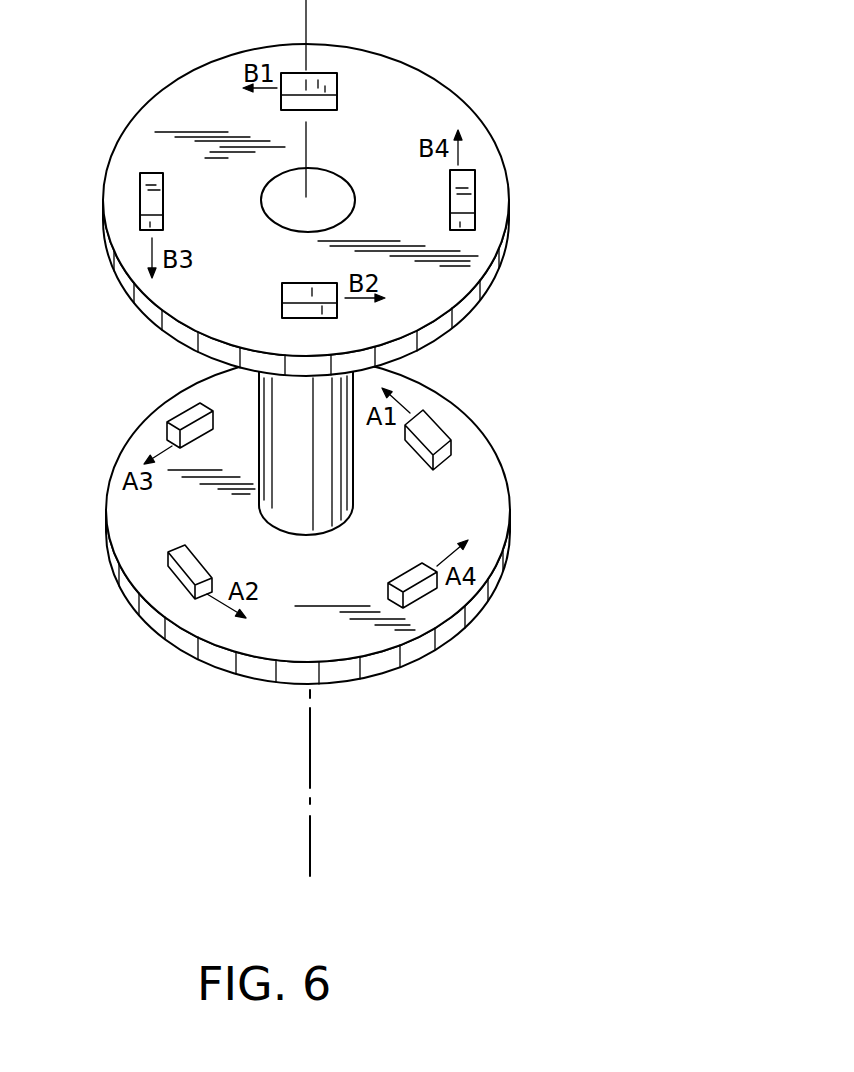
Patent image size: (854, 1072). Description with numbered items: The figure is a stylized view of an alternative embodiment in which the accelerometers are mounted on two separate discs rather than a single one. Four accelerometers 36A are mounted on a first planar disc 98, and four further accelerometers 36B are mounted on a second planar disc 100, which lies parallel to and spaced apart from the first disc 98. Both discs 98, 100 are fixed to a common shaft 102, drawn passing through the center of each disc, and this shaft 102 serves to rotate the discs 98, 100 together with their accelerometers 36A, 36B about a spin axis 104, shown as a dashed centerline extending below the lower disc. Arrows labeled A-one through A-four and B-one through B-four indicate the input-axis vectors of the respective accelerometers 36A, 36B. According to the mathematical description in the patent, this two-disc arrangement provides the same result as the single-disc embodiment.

The first planar disc 98 is at (510, 533).
The second planar disc 100 is at (462, 95).
The shaft 102 is at (355, 492).
The accelerometers 36A is at (174, 418).
The accelerometers 36B is at (318, 82).
The spin axis 104 is at (376, 784).